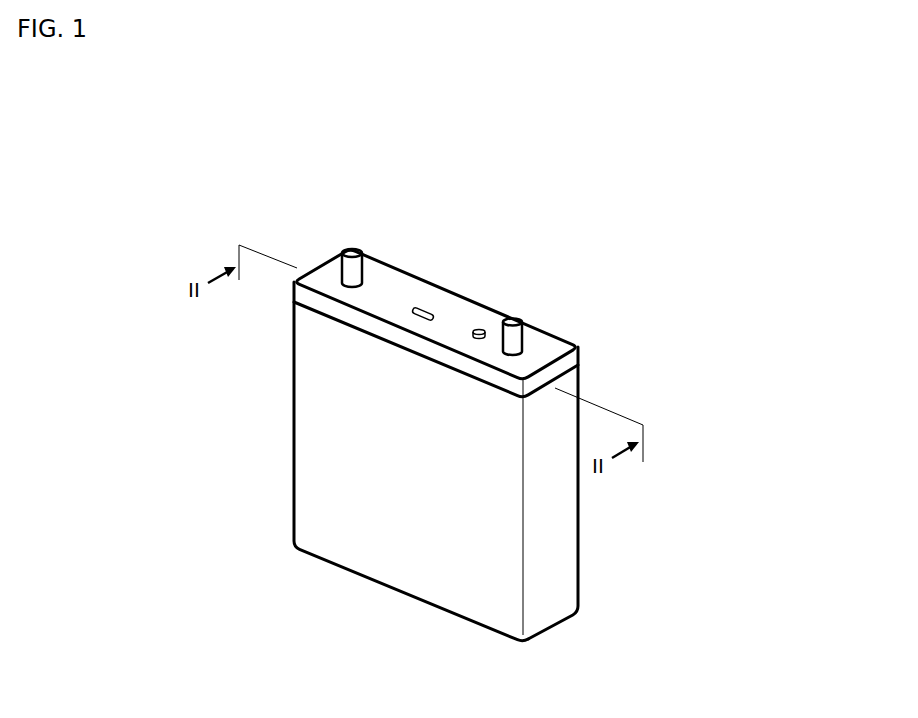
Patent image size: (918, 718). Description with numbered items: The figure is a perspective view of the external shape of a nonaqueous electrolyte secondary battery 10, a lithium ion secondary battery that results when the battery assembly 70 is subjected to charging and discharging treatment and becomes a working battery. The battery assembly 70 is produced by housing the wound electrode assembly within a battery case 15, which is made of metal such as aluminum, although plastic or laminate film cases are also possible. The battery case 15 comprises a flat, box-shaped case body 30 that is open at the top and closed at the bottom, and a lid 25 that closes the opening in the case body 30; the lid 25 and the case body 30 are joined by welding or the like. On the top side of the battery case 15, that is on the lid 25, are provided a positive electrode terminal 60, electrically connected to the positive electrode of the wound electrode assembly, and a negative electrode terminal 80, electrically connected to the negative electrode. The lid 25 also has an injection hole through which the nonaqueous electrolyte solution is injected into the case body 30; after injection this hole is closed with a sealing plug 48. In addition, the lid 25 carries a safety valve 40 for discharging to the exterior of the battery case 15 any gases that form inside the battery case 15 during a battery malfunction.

The lithium ion secondary battery 10 is at (547, 396).
The battery assembly 70 is at (491, 421).
The battery case 15 is at (408, 562).
The case body 30 is at (570, 575).
The lid 25 is at (572, 362).
The positive electrode terminal 60 is at (353, 249).
The negative electrode terminal 80 is at (513, 317).
The safety valve 40 is at (420, 307).
The sealing plug 48 is at (478, 329).